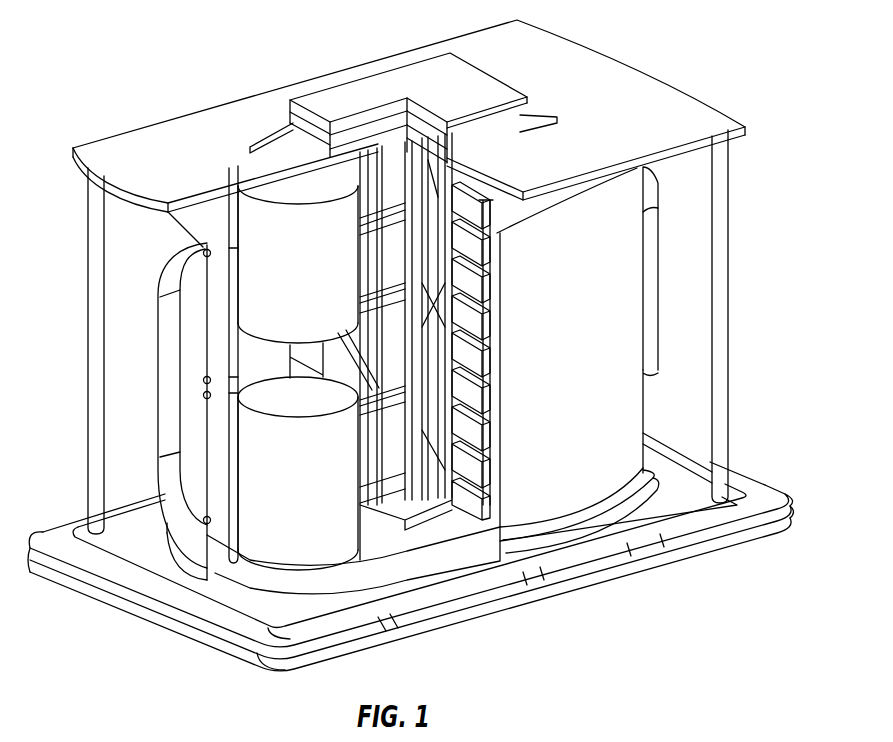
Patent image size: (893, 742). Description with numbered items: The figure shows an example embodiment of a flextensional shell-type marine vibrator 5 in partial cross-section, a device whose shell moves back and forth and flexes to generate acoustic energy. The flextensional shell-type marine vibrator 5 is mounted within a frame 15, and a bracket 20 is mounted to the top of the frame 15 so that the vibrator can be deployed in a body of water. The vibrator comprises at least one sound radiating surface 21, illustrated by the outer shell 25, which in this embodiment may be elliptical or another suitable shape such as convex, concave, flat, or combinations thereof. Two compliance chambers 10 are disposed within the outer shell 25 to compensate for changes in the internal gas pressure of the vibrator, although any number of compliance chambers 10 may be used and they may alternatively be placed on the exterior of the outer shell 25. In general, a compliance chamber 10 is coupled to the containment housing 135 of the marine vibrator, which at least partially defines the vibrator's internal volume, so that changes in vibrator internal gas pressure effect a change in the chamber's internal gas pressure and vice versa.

The flextensional shell-type marine vibrator 5 is at (672, 313).
The compliance chamber 10 is at (360, 263).
The frame 15 is at (593, 578).
The bracket 20 is at (413, 80).
The sound radiating surface 21 is at (610, 280).
The outer shell 25 is at (620, 398).
The containment housing 135 is at (711, 73).